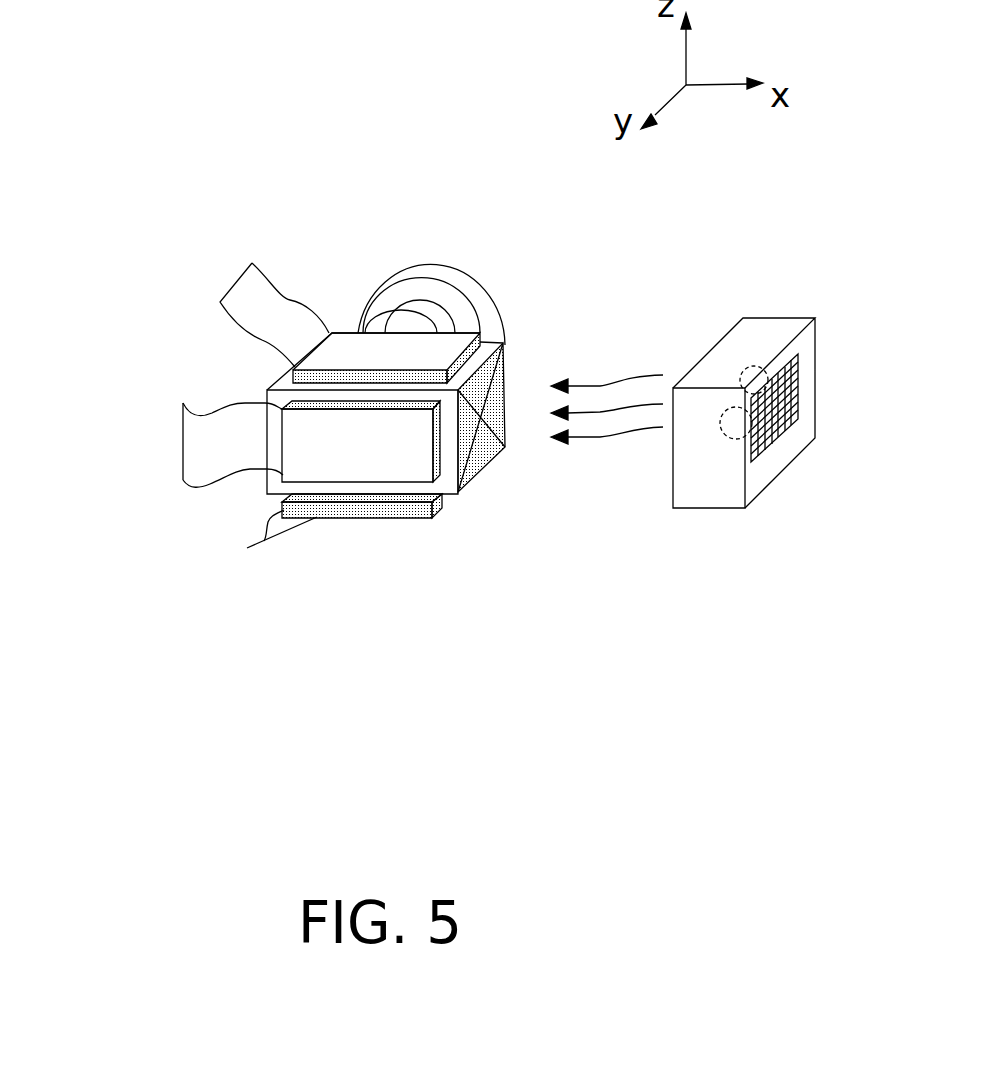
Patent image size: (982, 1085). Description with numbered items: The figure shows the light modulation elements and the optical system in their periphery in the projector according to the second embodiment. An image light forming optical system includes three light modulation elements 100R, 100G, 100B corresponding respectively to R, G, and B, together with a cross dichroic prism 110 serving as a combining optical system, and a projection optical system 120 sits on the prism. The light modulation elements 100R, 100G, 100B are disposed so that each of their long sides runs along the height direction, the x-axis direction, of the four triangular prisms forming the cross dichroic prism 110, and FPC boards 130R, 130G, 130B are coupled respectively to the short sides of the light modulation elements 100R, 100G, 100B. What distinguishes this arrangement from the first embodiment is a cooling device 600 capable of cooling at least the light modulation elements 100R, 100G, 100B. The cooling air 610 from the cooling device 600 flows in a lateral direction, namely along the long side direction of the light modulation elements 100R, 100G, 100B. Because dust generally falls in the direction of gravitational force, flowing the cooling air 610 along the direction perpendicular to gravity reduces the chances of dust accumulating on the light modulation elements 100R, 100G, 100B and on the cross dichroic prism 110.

The light modulation element 100R is at (335, 333).
The light modulation element 100G is at (360, 467).
The light modulation element 100B is at (455, 497).
The cross dichroic prism 110 is at (505, 377).
The projection optical system 120 is at (458, 258).
The FPC board 130R is at (232, 288).
The FPC board 130G is at (183, 445).
The FPC board 130B is at (260, 553).
The cooling device 600 is at (783, 318).
The cooling air 610 is at (612, 372).